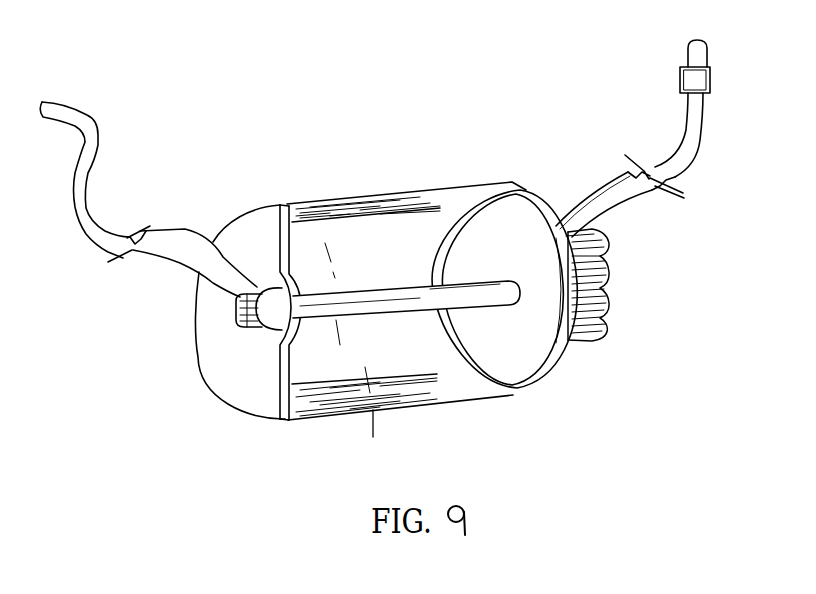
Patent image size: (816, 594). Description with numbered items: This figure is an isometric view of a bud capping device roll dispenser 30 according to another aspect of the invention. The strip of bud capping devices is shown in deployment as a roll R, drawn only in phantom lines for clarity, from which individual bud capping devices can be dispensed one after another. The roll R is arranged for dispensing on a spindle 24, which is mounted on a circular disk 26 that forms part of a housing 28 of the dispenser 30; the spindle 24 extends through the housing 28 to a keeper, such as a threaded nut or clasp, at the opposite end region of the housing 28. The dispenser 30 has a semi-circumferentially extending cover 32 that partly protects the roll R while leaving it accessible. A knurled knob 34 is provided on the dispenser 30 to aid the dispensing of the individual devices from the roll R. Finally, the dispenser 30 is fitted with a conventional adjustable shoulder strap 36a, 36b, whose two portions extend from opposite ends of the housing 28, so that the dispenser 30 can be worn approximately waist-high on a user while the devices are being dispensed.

The spindle 24 is at (435, 318).
The circular disk 26 is at (535, 349).
The housing 28 is at (232, 212).
The dispenser 30 is at (523, 77).
The cover 32 is at (402, 192).
The knurled knob 34 is at (606, 278).
The shoulder strap 36a is at (102, 206).
The shoulder strap 36b is at (700, 158).
The roll R is at (383, 450).